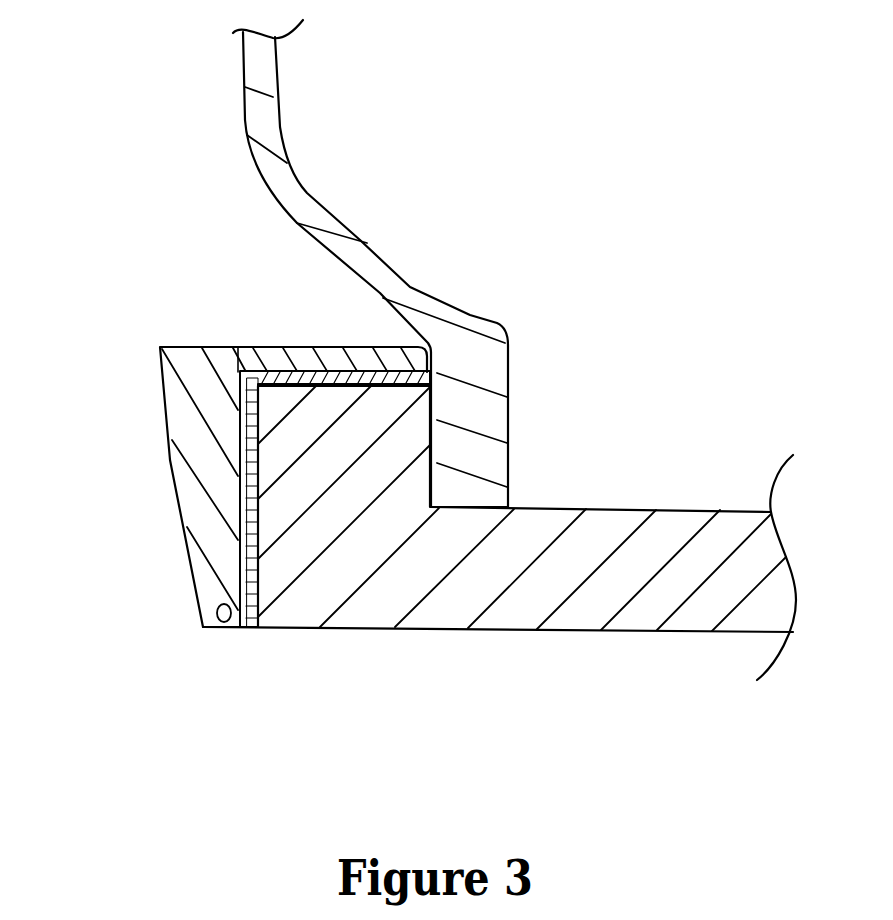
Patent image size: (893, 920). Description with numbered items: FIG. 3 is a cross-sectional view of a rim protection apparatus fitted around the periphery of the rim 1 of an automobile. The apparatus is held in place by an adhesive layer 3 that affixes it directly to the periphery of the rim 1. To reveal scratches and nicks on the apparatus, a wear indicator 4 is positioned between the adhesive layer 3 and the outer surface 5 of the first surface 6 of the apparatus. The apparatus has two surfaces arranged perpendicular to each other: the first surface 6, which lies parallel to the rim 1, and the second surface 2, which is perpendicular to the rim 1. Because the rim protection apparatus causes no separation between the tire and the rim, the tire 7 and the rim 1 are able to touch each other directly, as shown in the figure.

The rim 1 is at (345, 633).
The second surface 2 is at (303, 347).
The adhesive layer 3 is at (245, 628).
The wear indicator 4 is at (232, 628).
The outer surface 5 is at (222, 631).
The first surface 6 is at (158, 385).
The tire 7 is at (533, 386).